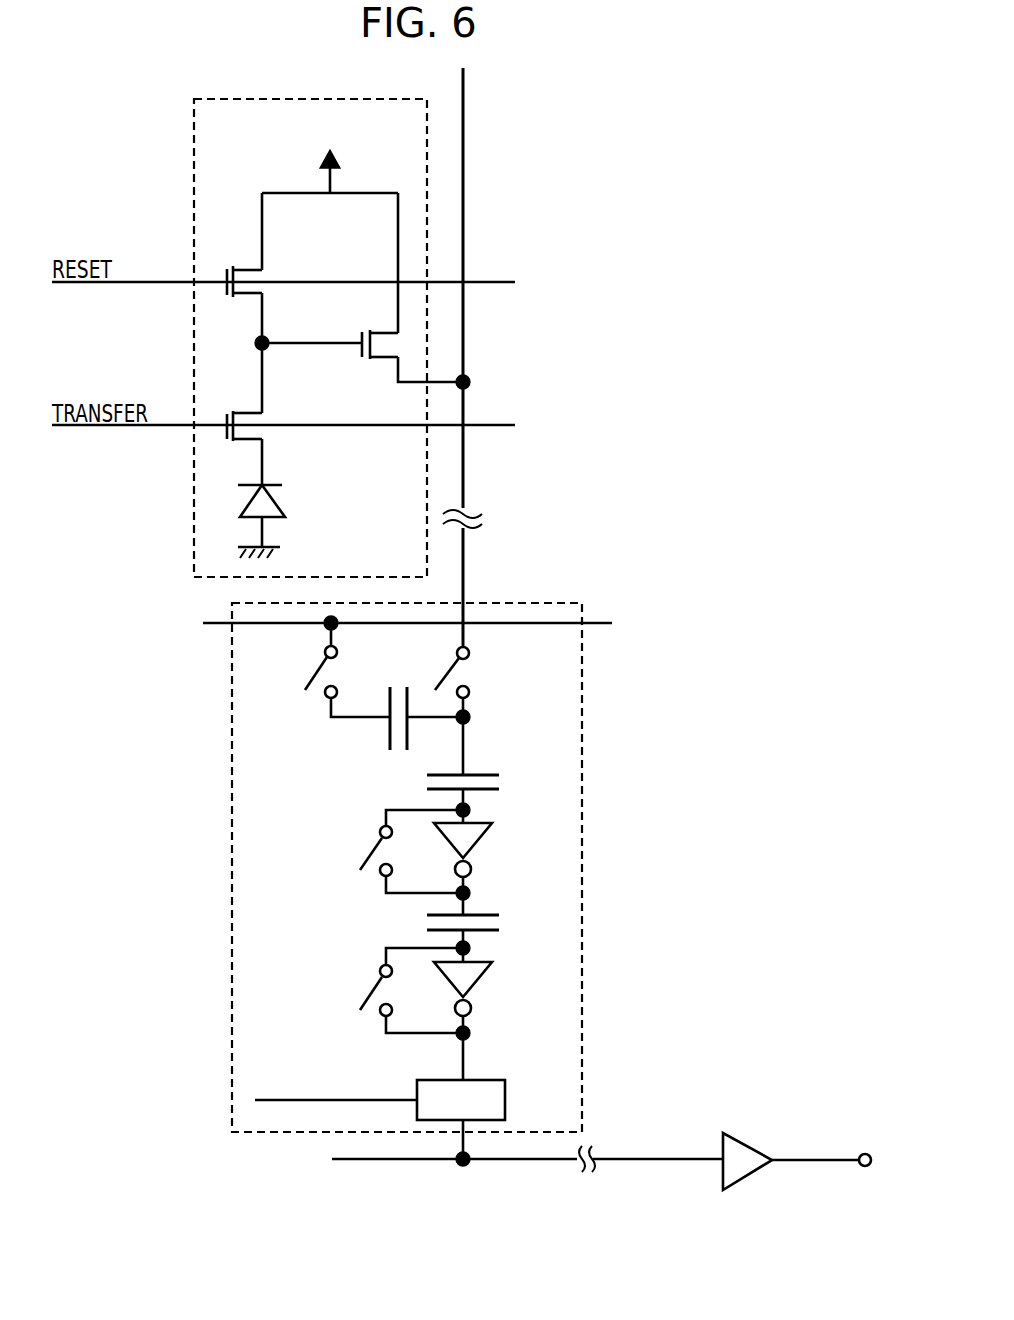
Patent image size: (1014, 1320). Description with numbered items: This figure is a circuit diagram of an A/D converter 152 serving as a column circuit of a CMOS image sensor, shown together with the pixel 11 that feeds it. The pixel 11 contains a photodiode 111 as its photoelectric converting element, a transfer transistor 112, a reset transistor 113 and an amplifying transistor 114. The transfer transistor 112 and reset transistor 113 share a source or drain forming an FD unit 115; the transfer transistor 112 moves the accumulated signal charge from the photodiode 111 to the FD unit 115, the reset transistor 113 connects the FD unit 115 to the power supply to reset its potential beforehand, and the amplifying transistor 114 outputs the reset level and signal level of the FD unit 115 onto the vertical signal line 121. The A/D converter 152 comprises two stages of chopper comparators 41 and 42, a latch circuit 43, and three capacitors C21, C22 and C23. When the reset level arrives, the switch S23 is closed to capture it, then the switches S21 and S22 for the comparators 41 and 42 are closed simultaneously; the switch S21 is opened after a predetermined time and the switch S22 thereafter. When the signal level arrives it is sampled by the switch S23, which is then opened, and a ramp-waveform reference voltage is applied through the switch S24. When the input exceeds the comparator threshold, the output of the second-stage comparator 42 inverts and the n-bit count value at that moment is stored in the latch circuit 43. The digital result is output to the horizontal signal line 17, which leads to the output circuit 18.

The pixel 11 is at (284, 99).
The photodiode 111 is at (285, 490).
The transfer transistor 112 is at (257, 433).
The reset transistor 113 is at (257, 285).
The amplifying transistor 114 is at (384, 360).
The FD unit 115 is at (266, 346).
The vertical signal line 121 is at (466, 322).
The A/D converter 152 is at (545, 603).
The chopper comparator 41 is at (500, 848).
The chopper comparator 42 is at (500, 981).
The latch circuit 43 is at (500, 1098).
The horizontal signal line 17 is at (378, 1163).
The output circuit 18 is at (746, 1136).
The switch S21 is at (376, 851).
The switch S22 is at (376, 990).
The switch S23 is at (484, 711).
The switch S24 is at (316, 670).
The capacitor C21 is at (492, 796).
The capacitor C22 is at (492, 936).
The capacitor C23 is at (413, 699).